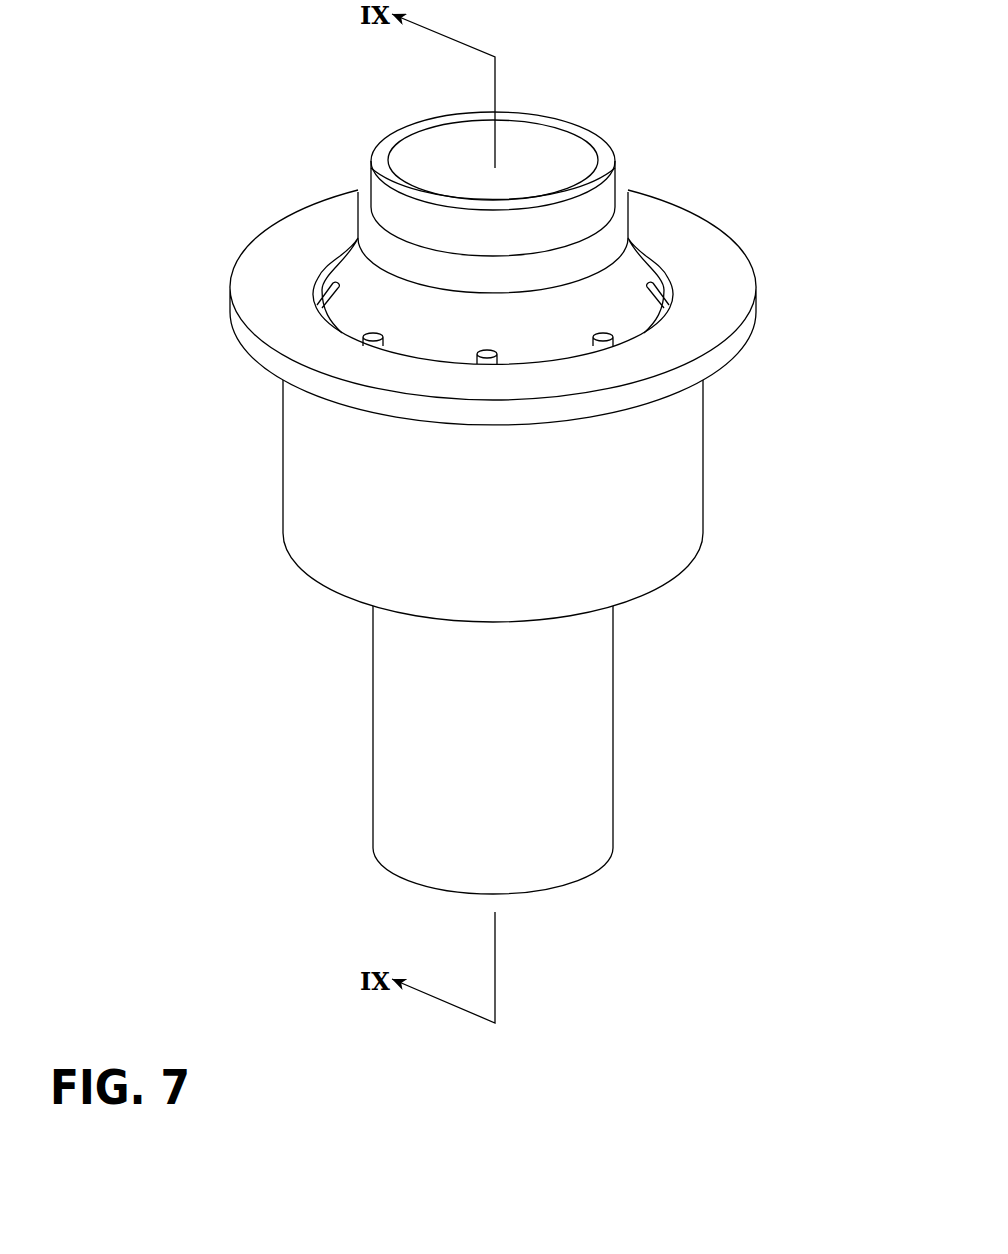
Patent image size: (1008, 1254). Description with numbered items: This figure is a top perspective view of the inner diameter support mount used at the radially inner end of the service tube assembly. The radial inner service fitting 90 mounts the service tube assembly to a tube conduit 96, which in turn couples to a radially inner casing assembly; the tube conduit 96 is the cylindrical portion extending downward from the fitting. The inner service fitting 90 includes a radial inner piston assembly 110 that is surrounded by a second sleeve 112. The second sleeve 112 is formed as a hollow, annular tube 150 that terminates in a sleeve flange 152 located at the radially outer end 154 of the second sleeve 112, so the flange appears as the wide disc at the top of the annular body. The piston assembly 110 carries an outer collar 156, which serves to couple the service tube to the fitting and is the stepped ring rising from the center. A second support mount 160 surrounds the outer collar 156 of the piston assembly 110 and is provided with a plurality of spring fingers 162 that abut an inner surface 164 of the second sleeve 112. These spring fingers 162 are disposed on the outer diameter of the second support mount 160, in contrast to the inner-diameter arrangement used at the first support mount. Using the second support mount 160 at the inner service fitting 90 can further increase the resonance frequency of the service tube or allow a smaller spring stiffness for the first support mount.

The inner service fitting 90 is at (148, 352).
The tube conduit 96 is at (583, 773).
The radial inner piston assembly 110 is at (550, 130).
The second sleeve 112 is at (707, 485).
The hollow annular tube 150 is at (685, 443).
The sleeve flange 152 is at (713, 320).
The radially outer end 154 is at (312, 262).
The outer collar 156 is at (568, 118).
The second support mount 160 is at (620, 282).
The spring fingers 162 is at (413, 343).
The inner surface 164 is at (337, 258).